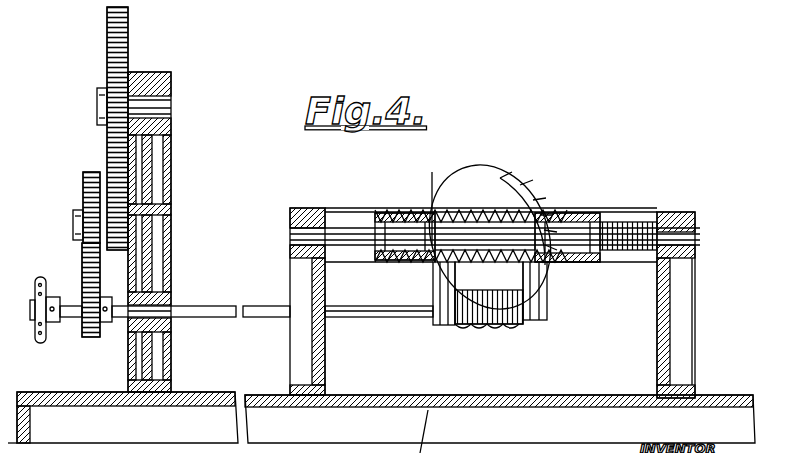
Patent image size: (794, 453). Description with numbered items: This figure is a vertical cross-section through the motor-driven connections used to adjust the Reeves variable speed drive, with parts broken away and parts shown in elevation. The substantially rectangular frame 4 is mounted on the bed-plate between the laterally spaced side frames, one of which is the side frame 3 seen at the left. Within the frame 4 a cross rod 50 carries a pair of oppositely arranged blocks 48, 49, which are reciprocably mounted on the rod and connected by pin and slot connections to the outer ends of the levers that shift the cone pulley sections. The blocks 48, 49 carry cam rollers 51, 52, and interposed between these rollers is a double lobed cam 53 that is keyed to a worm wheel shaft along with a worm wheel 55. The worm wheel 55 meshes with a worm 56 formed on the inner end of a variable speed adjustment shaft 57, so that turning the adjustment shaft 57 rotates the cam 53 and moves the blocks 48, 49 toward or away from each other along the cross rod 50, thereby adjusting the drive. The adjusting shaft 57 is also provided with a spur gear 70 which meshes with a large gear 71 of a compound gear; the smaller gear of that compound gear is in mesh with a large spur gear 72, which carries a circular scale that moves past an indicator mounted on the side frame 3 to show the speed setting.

The side frame 3 is at (162, 157).
The rectangular frame 4 is at (297, 346).
The block 48 is at (605, 262).
The block 49 is at (378, 252).
The cross rod 50 is at (700, 236).
The cam roller 51 is at (550, 208).
The cam roller 52 is at (412, 208).
The double lobed cam 53 is at (455, 176).
The worm wheel 55 is at (512, 185).
The worm 56 is at (492, 327).
The variable speed adjustment shaft 57 is at (352, 313).
The spur gear 70 is at (89, 332).
The large gear 71 is at (83, 184).
The large spur gear 72 is at (130, 22).